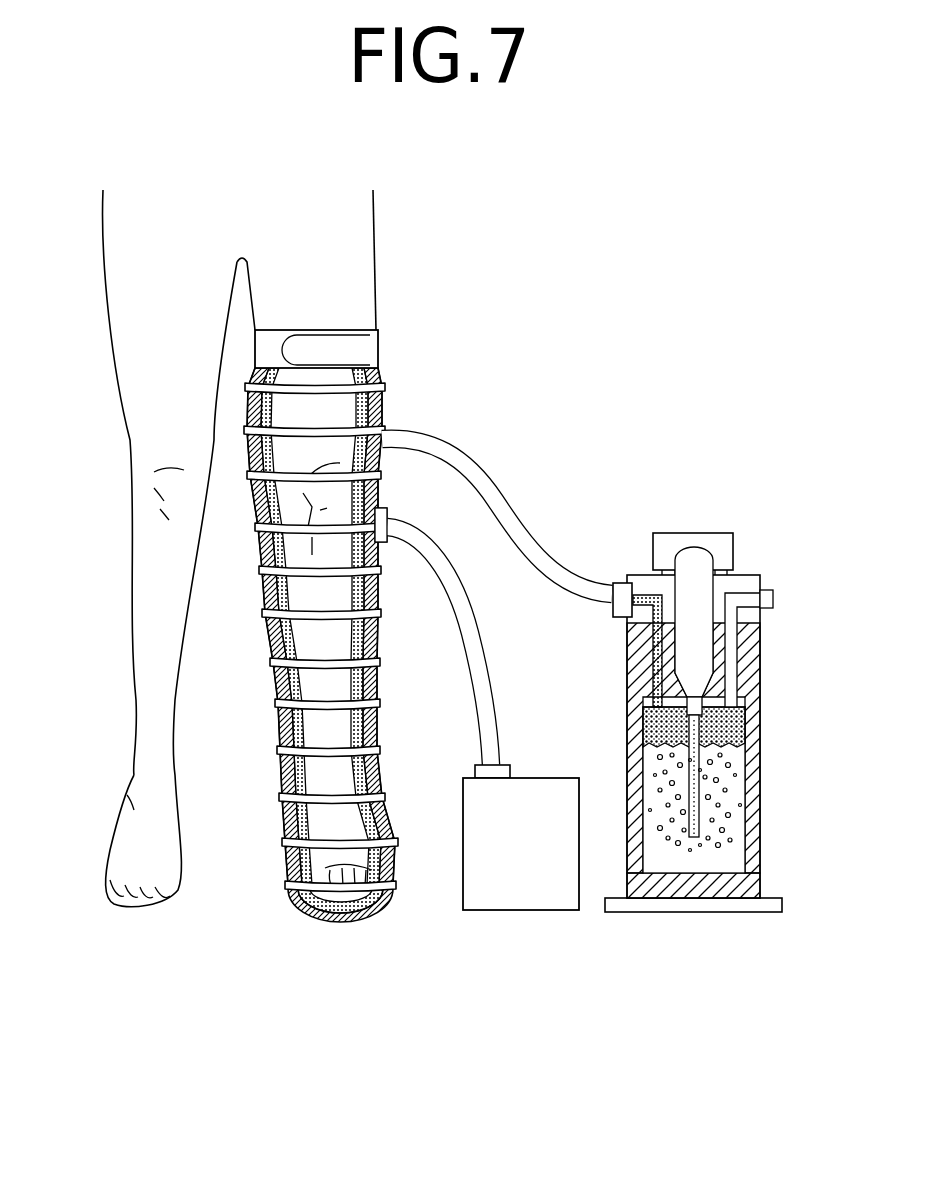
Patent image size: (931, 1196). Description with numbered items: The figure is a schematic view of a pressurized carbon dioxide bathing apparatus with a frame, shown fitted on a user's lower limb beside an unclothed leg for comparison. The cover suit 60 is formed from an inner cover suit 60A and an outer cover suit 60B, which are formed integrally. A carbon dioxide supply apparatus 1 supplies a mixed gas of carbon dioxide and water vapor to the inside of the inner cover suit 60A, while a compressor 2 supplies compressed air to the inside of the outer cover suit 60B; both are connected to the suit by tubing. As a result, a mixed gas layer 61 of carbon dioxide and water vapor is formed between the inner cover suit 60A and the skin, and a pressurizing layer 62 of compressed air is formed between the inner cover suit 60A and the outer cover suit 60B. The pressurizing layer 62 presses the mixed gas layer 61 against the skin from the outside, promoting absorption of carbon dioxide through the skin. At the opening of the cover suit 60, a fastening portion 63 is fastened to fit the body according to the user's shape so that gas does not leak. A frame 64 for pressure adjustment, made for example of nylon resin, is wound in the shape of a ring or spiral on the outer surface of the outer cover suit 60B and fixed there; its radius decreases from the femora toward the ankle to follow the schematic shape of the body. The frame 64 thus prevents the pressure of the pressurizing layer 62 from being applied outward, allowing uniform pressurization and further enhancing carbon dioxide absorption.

The carbon dioxide supply apparatus 1 is at (715, 533).
The compressor 2 is at (530, 778).
The cover suit 60 is at (358, 614).
The inner cover suit 60A is at (285, 690).
The outer cover suit 60B is at (275, 773).
The mixed gas layer 61 is at (330, 905).
The pressurizing layer 62 is at (360, 907).
The fastening portion 63 is at (377, 350).
The frame 64 is at (377, 383).